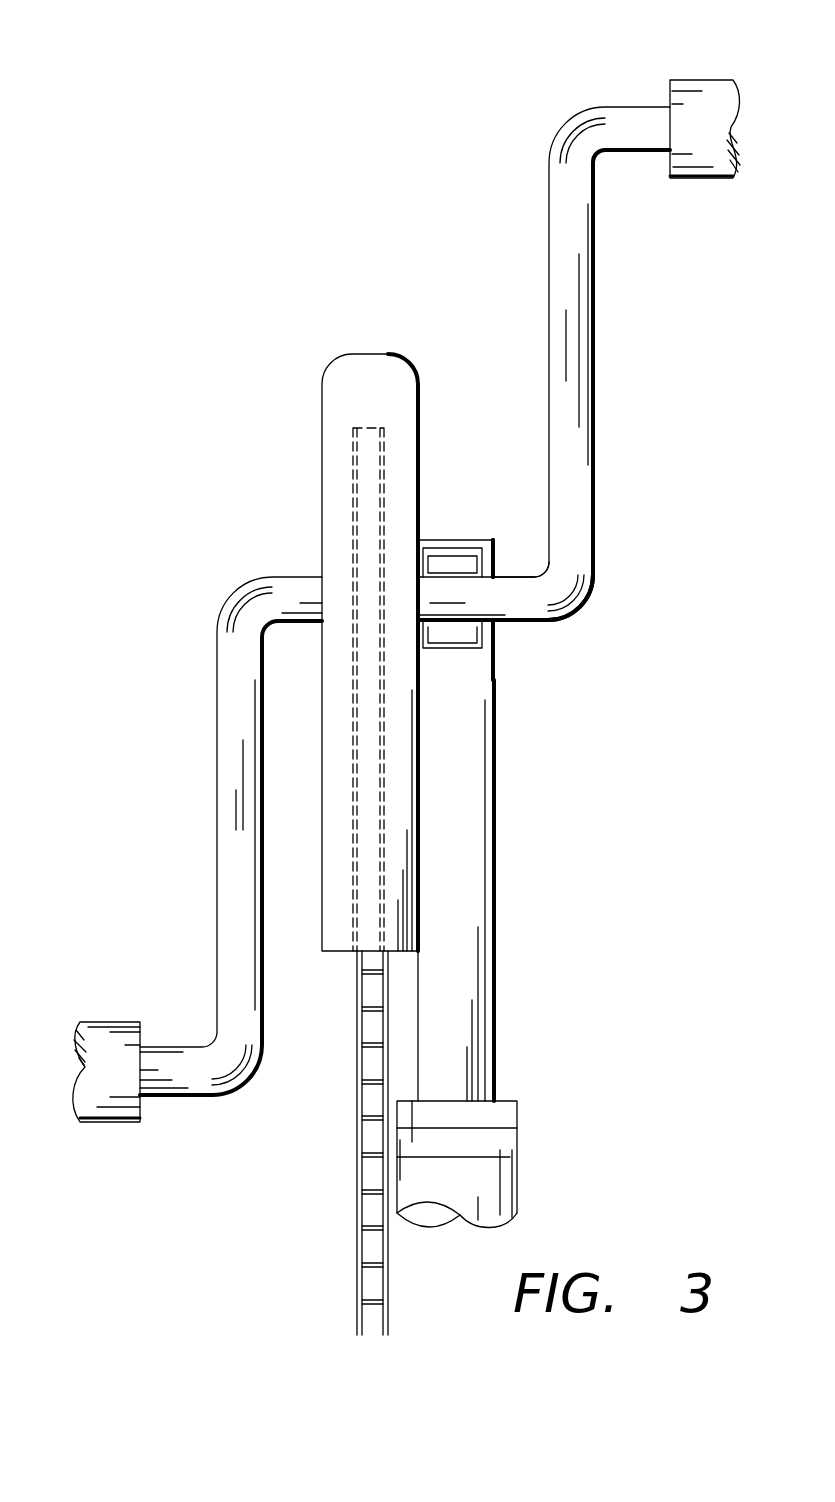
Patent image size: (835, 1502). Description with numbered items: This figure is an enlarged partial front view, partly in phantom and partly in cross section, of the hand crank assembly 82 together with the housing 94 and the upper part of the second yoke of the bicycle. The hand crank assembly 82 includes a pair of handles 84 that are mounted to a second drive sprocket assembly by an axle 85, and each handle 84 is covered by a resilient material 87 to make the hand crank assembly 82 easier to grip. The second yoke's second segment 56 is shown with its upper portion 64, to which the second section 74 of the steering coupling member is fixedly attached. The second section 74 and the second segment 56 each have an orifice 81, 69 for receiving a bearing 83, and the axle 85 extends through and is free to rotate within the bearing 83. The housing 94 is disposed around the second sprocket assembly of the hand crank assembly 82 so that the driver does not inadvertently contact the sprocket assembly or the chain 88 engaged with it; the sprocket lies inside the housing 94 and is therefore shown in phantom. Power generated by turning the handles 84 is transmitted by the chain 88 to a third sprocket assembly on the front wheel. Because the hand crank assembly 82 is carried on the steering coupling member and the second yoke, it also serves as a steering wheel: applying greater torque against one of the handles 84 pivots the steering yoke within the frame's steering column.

The hand crank assembly 82 is at (214, 524).
The handle 84 is at (618, 118).
The resilient material 87 is at (702, 79).
The housing 94 is at (368, 354).
The orifice 81 is at (417, 633).
The upper portion of the second segment 64 is at (440, 540).
The orifice 69 is at (494, 567).
The axle 85 is at (552, 592).
The bearing 83 is at (494, 630).
The second section of the steering coupling member 74 is at (493, 657).
The second segment of the second yoke 56 is at (498, 914).
The chain 88 is at (355, 1202).